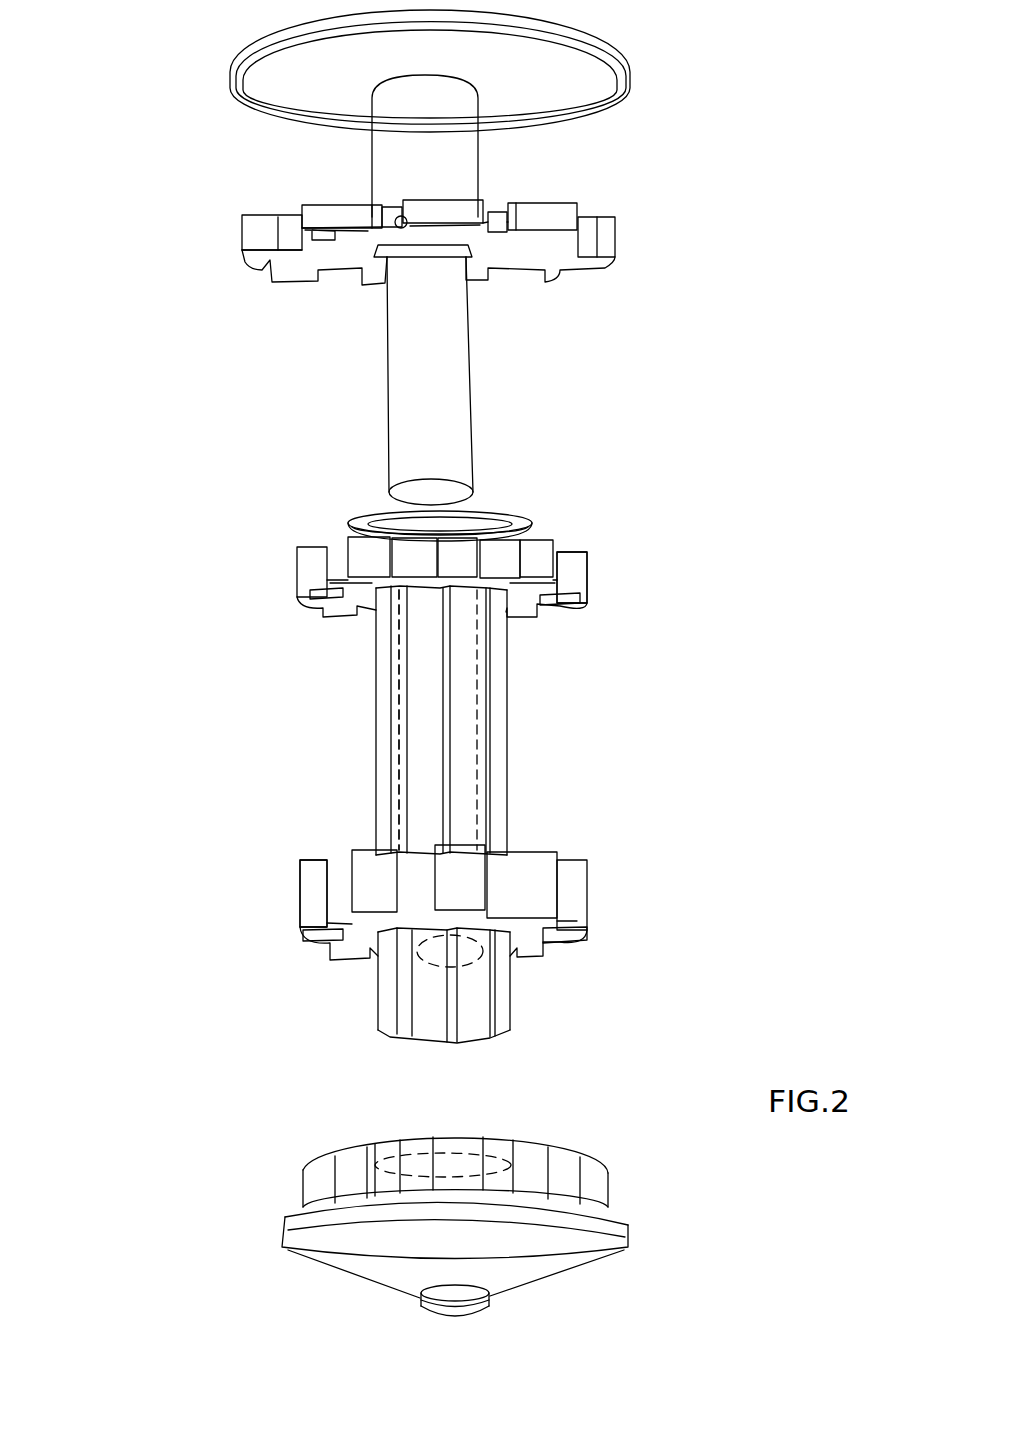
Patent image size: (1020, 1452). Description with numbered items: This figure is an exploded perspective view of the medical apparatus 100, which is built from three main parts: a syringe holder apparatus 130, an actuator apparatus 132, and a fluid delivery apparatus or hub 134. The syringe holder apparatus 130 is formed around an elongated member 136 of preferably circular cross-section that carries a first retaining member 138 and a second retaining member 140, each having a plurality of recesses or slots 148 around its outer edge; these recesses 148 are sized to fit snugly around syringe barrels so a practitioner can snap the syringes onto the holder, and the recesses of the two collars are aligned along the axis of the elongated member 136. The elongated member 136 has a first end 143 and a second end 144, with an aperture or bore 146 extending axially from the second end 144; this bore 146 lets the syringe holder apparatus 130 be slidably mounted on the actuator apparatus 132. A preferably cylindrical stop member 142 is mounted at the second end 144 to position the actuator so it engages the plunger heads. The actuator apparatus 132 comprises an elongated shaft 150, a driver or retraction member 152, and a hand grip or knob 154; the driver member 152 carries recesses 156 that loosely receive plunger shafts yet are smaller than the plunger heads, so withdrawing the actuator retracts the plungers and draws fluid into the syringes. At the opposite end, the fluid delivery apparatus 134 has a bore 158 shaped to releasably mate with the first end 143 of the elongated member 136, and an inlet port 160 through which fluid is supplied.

The medical apparatus 100 is at (165, 362).
The syringe holder apparatus 130 is at (312, 714).
The actuator apparatus 132 is at (371, 203).
The fluid delivery apparatus 134 is at (274, 1140).
The elongated member 136 is at (496, 723).
The first retaining member 138 is at (540, 866).
The second retaining member 140 is at (530, 560).
The stop member 142 is at (470, 530).
The first end 143 is at (562, 1006).
The second end 144 is at (312, 503).
The aperture or bore 146 is at (473, 667).
The recesses or slots 148 is at (570, 566).
The elongated shaft 150 is at (440, 382).
The driver or retraction member 152 is at (565, 212).
The hand grip or knob 154 is at (566, 78).
The recesses 156 is at (500, 212).
The bore 158 is at (506, 1168).
The inlet port 160 is at (462, 1304).